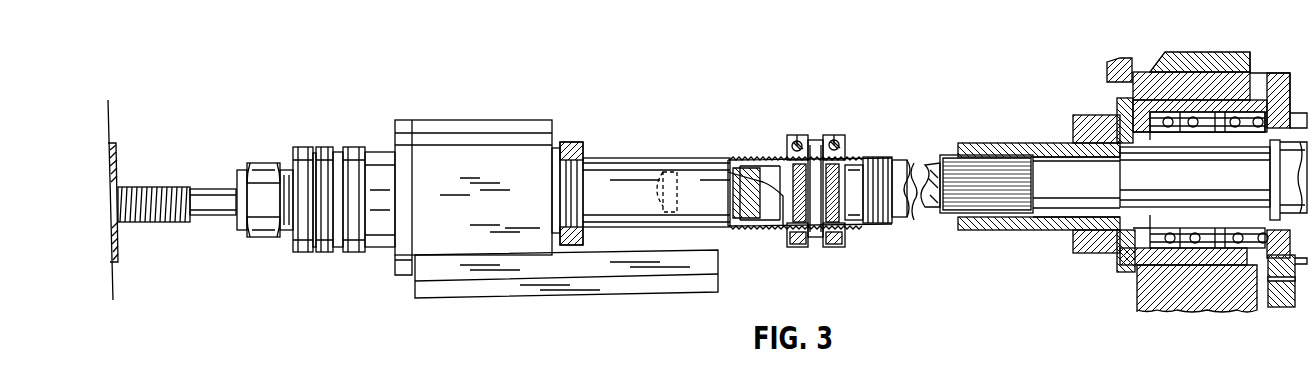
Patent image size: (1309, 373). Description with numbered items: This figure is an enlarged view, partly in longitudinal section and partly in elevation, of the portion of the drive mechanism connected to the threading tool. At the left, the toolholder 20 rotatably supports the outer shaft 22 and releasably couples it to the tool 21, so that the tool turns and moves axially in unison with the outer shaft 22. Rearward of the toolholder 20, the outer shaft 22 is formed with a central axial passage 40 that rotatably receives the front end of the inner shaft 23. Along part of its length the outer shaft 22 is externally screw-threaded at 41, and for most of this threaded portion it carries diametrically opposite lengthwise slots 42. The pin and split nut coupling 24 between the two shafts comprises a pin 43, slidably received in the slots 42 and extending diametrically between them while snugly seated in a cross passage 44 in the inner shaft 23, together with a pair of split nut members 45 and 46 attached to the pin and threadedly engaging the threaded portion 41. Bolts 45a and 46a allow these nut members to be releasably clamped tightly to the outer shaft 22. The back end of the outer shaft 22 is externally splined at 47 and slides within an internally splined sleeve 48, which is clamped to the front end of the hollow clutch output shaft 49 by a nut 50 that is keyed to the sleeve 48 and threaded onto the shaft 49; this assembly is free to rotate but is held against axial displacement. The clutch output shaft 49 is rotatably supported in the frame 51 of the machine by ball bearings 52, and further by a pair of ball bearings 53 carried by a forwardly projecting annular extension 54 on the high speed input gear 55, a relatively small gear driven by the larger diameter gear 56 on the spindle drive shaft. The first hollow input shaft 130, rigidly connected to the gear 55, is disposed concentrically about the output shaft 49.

The toolholder 20 is at (502, 118).
The tool 21 is at (172, 184).
The outer shaft 22 is at (626, 159).
The inner shaft 23 is at (866, 165).
The pin and split nut coupling 24 is at (815, 138).
The central axial passage 40 is at (708, 172).
The externally screw-threaded portion 41 is at (770, 225).
The lengthwise slots 42 is at (753, 159).
The pin 43 is at (816, 248).
The cross passage 44 is at (858, 222).
The split nut member 45 is at (792, 136).
The bolt 45a is at (802, 134).
The split nut member 46 is at (836, 135).
The bolt 46a is at (840, 142).
The external spline 47 is at (955, 220).
The internally splined sleeve 48 is at (1010, 154).
The clutch output shaft 49 is at (1168, 148).
The nut 50 is at (1082, 116).
The frame 51 is at (1126, 278).
The ball bearings 52 is at (1215, 225).
The ball bearings 53 is at (1256, 130).
The annular extension 54 is at (1230, 105).
The high speed input gear 55 is at (1268, 72).
The gear 56 is at (1275, 303).
The first hollow input shaft 130 is at (1287, 90).